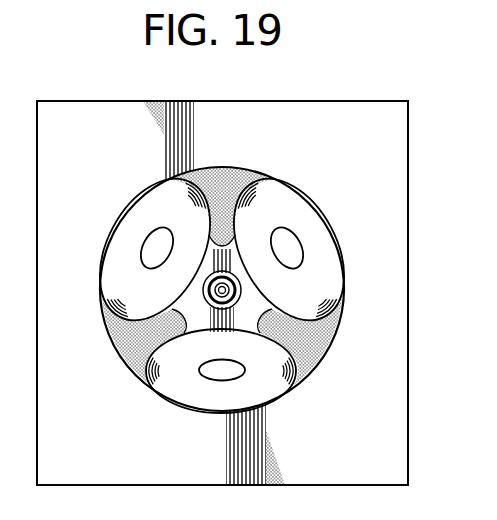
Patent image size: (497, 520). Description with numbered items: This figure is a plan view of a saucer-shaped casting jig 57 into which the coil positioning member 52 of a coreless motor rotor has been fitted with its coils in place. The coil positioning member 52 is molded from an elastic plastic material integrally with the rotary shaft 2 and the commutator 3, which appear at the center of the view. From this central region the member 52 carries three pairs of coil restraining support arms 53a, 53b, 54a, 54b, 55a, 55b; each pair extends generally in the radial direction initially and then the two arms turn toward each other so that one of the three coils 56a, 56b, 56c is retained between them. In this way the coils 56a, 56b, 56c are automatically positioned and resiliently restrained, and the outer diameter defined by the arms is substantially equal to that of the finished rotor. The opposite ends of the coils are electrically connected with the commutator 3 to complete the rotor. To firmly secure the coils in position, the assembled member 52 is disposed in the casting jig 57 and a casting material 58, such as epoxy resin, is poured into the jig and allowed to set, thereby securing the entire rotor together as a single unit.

The casting jig 57 is at (311, 100).
The coil restraining support arm 54b is at (172, 176).
The coil restraining support arm 54a is at (108, 316).
The coil restraining support arm 55a is at (262, 180).
The coil restraining support arm 55b is at (338, 313).
The coil 56a is at (180, 393).
The coil 56b is at (140, 212).
The coil 56c is at (295, 212).
The coil positioning member 52 is at (194, 320).
The coil restraining support arm 53a is at (297, 374).
The coil restraining support arm 53b is at (145, 372).
The casting material 58 is at (118, 342).
The rotary shaft 2 is at (212, 280).
The commutator 3 is at (233, 278).